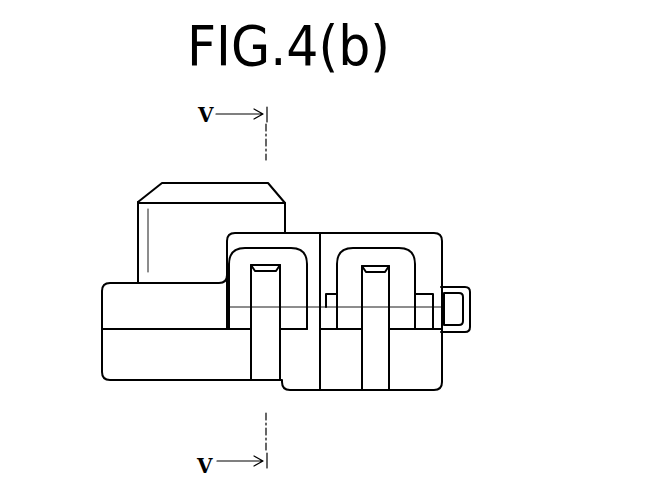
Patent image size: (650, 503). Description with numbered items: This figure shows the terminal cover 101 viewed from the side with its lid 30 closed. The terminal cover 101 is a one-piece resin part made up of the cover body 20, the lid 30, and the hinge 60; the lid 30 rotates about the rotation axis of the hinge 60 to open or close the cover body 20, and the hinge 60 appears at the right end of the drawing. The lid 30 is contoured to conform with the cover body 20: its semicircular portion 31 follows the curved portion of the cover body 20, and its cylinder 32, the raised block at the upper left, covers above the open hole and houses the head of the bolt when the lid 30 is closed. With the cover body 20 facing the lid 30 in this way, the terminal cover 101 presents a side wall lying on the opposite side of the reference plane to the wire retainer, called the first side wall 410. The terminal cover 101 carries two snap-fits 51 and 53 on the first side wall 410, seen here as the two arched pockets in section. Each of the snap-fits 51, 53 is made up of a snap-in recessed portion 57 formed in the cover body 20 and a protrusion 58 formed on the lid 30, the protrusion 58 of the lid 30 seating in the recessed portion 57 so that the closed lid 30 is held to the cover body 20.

The terminal cover 101 is at (497, 203).
The cover body 20 is at (117, 355).
The lid 30 is at (120, 308).
The semicircular portion 31 is at (166, 300).
The cylinder 32 is at (165, 222).
The first side wall 410 is at (428, 254).
The snap-fit 51 is at (295, 247).
The snap-fit 53 is at (380, 245).
The snap-in recessed portion 57 is at (233, 292).
The protrusion 58 is at (263, 296).
The hinge 60 is at (470, 308).